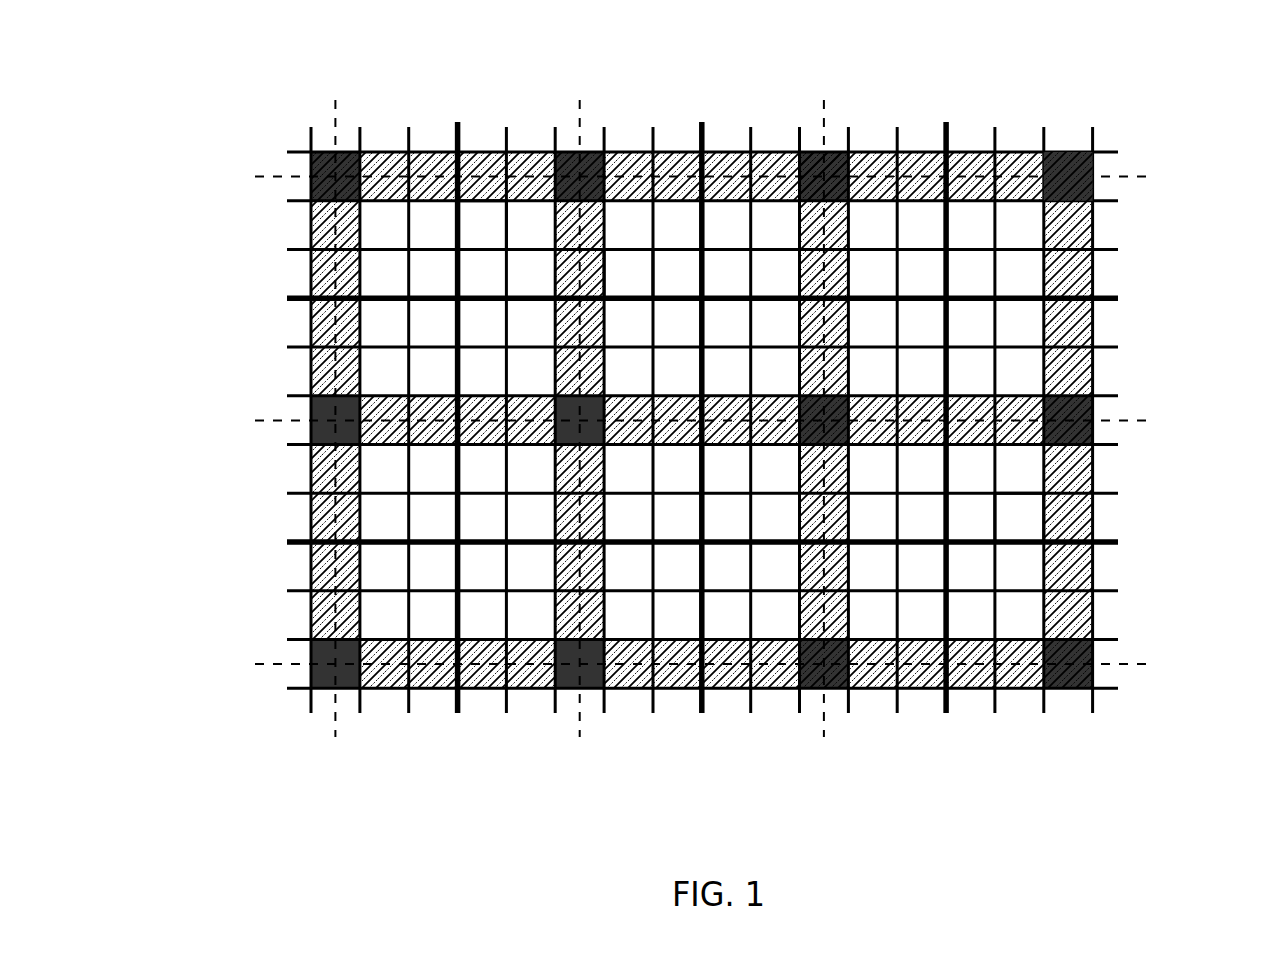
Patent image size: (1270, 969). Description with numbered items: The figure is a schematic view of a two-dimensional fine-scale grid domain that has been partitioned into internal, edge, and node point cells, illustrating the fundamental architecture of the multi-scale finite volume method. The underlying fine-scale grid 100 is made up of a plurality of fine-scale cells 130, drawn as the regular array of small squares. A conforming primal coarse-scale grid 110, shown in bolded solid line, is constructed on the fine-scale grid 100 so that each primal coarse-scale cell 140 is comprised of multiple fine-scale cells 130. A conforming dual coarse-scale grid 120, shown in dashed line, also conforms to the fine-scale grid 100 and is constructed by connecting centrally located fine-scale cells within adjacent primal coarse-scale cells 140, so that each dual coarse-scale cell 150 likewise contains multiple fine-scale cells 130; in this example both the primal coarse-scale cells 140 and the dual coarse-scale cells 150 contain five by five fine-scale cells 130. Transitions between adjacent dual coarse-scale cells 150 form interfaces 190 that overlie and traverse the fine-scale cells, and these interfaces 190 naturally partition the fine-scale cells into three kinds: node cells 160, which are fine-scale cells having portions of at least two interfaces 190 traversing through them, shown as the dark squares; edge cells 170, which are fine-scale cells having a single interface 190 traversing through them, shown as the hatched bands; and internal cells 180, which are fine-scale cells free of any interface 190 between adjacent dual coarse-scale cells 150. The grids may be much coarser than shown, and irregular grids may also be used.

The fine-scale grid 100 is at (297, 201).
The primal coarse-scale grid 110 is at (297, 300).
The dual coarse-scale grid 120 is at (283, 423).
The fine-scale cell 130 is at (487, 223).
The primal coarse-scale cell 140 is at (627, 293).
The dual coarse-scale cell 150 is at (730, 177).
The node cell 160 is at (1077, 185).
The edge cell 170 is at (1078, 309).
The internal cell 180 is at (1030, 515).
The interface 190 is at (822, 608).